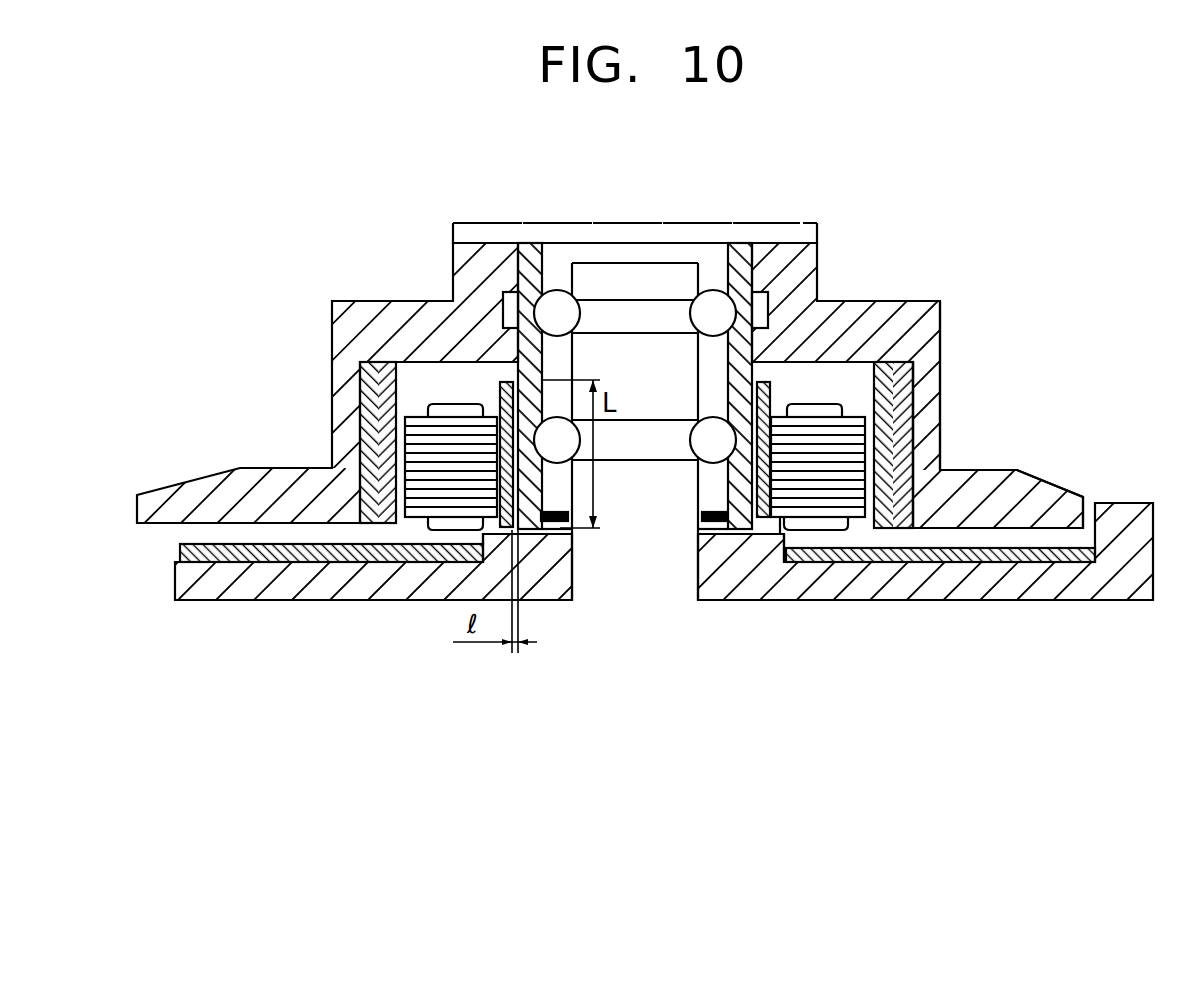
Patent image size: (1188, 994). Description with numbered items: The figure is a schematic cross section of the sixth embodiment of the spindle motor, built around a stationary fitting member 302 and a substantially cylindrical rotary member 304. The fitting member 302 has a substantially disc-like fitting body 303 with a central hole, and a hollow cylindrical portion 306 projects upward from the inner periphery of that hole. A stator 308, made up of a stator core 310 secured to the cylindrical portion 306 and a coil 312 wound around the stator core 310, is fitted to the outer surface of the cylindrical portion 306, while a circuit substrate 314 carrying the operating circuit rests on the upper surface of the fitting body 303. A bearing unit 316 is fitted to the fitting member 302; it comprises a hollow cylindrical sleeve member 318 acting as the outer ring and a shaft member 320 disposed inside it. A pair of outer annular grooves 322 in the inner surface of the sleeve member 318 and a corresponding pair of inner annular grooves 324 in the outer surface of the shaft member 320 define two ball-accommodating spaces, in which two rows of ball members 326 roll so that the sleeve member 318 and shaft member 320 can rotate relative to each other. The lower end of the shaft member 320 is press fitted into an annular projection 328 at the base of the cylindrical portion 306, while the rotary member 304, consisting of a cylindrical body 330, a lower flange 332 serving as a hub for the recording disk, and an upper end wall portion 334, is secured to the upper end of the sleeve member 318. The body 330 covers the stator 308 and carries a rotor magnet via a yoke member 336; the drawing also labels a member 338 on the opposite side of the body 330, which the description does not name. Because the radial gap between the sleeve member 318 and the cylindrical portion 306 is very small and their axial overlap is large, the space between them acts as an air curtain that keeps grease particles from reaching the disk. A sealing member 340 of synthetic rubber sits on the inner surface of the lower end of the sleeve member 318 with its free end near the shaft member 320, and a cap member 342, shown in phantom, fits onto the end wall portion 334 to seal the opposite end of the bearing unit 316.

The fitting member 302 is at (350, 598).
The fitting body 303 is at (408, 598).
The rotary member 304 is at (627, 381).
The cylindrical portion 306 is at (775, 388).
The stator 308 is at (438, 397).
The stator core 310 is at (838, 512).
The coil 312 is at (840, 400).
The circuit substrate 314 is at (983, 560).
The bearing unit 316 is at (712, 243).
The sleeve member 318 is at (560, 272).
The shaft member 320 is at (647, 598).
The outer annular grooves 322 is at (608, 262).
The inner annular grooves 324 is at (640, 303).
The ball members 326 is at (688, 320).
The annular projection 328 is at (755, 598).
The cylindrical body 330 is at (925, 432).
The flange 332 is at (1030, 487).
The end wall portion 334 is at (850, 312).
The yoke member 336 is at (363, 447).
The yoke member 338 is at (383, 385).
The sealing member 340 is at (713, 525).
The cap member 342 is at (560, 222).